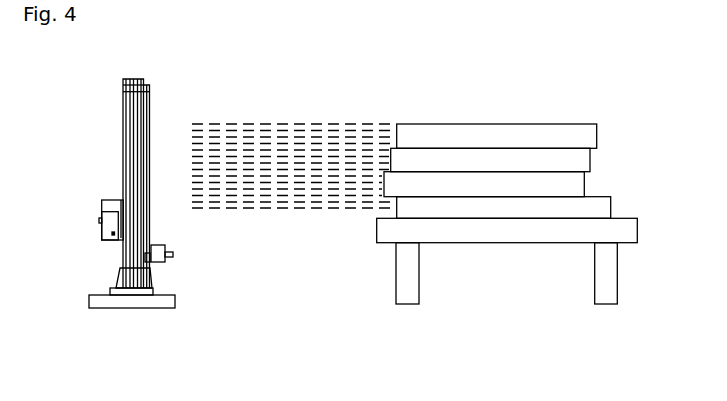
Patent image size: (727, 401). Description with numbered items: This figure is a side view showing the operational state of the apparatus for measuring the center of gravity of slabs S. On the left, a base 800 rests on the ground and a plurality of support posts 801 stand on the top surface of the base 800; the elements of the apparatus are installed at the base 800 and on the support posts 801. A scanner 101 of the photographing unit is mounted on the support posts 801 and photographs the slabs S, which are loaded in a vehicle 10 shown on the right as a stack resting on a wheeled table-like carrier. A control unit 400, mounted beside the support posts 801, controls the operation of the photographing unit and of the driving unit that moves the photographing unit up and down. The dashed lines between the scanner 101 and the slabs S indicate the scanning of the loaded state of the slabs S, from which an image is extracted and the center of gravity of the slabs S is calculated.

The support post 801 is at (126, 101).
The control unit 400 is at (107, 226).
The scanner 101 is at (173, 253).
The base 800 is at (120, 306).
The slabs S is at (526, 133).
The vehicle 10 is at (601, 285).